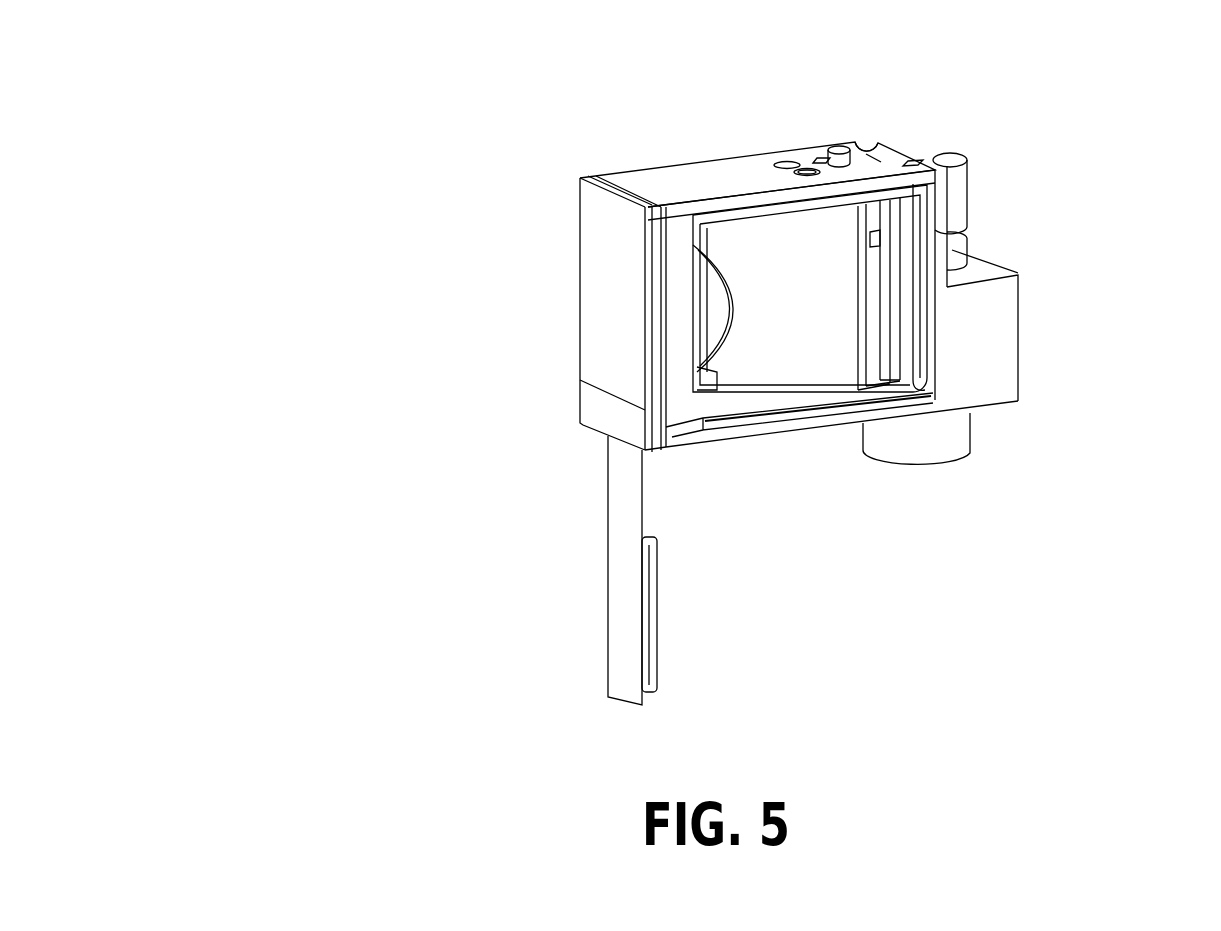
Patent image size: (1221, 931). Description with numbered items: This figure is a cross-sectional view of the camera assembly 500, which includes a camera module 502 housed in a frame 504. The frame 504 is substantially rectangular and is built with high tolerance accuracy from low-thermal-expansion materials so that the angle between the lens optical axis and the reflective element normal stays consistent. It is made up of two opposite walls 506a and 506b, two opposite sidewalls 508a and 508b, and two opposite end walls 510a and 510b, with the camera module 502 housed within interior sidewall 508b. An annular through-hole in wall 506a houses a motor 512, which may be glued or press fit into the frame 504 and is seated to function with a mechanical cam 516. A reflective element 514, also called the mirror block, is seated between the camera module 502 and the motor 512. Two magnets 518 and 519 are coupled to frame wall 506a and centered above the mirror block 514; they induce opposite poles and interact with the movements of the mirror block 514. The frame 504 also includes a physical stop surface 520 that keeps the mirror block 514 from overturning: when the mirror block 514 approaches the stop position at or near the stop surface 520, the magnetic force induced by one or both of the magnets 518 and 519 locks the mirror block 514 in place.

The camera assembly 500 is at (216, 80).
The camera module 502 is at (570, 298).
The frame 504 is at (686, 161).
The wall 506a is at (737, 180).
The wall 506b is at (725, 443).
The sidewall 508a is at (877, 157).
The sidewall 508b is at (600, 378).
The end wall 510a is at (580, 179).
The end wall 510b is at (988, 353).
The motor 512 is at (981, 232).
The reflective element 514 is at (808, 365).
The mechanical cam 516 is at (975, 149).
The magnet 518 is at (790, 152).
The magnet 519 is at (801, 152).
The physical stop surface 520 is at (887, 357).